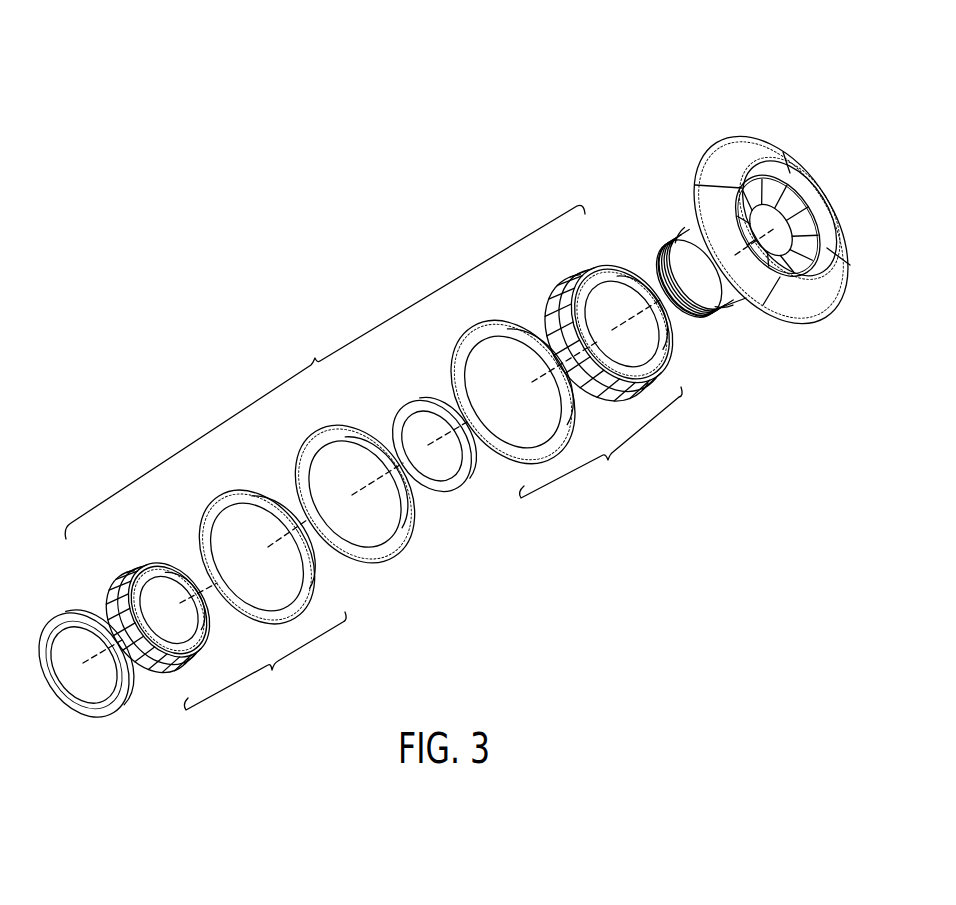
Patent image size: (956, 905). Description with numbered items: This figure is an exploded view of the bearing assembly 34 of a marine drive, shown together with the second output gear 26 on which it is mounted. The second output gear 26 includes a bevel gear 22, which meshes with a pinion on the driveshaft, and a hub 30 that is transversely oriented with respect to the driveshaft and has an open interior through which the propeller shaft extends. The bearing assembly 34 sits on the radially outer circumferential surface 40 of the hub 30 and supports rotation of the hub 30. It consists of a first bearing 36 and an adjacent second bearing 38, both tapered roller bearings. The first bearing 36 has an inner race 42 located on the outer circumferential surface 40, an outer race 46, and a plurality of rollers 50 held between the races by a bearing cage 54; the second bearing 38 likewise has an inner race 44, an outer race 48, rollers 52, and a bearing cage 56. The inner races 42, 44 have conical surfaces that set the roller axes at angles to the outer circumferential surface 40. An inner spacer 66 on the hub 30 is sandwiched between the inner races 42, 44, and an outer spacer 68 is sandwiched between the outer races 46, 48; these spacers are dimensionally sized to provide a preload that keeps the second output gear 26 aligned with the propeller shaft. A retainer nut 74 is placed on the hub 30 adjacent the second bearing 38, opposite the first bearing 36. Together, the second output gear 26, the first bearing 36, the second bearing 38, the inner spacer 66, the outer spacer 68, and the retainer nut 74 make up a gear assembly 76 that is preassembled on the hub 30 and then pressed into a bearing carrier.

The bevel gear 22 is at (756, 148).
The second output gear 26 is at (791, 78).
The hub 30 is at (722, 302).
The bearing assembly 34 is at (325, 372).
The first bearing 36 is at (601, 442).
The second bearing 38 is at (265, 661).
The outer circumferential surface 40 is at (680, 229).
The inner race 42 is at (641, 350).
The inner race 44 is at (165, 586).
The outer race 46 is at (502, 448).
The outer race 48 is at (247, 604).
The rollers 50 is at (600, 328).
The rollers 52 is at (158, 664).
The bearing cage 54 is at (556, 325).
The bearing cage 56 is at (115, 583).
The inner spacer 66 is at (459, 482).
The outer spacer 68 is at (400, 546).
The retainer nut 74 is at (82, 709).
The gear assembly 76 is at (590, 549).